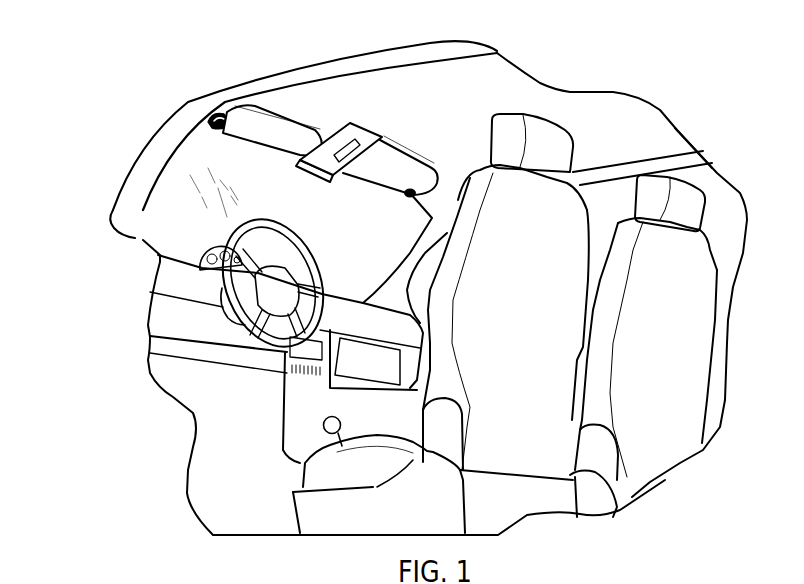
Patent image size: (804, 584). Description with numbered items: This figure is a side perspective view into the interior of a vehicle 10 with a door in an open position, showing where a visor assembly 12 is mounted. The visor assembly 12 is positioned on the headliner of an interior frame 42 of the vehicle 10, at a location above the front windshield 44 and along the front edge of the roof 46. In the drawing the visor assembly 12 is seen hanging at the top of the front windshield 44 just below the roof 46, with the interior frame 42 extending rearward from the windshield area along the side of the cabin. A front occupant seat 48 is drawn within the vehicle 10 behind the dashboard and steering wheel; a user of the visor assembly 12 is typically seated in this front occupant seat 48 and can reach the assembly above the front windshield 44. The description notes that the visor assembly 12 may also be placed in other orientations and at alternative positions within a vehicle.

The vehicle 10 is at (146, 98).
The visor assembly 12 is at (210, 152).
The interior frame 42 is at (613, 173).
The front windshield 44 is at (248, 170).
The roof 46 is at (420, 95).
The front occupant seat 48 is at (419, 511).